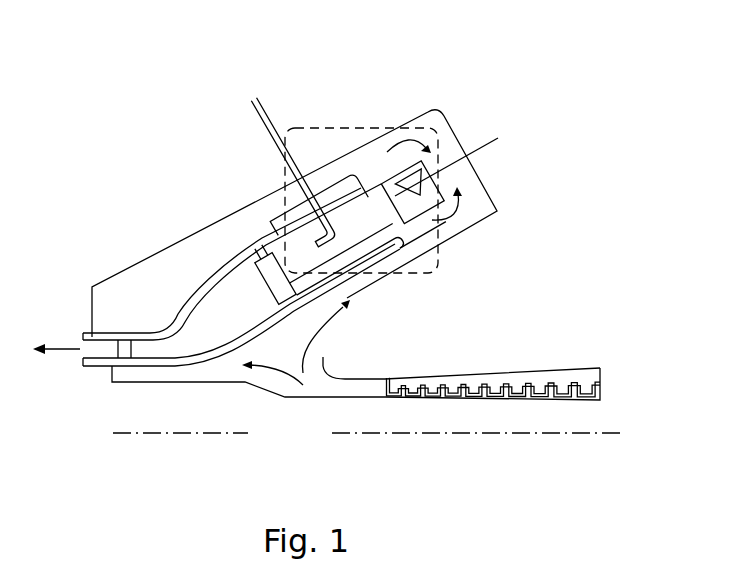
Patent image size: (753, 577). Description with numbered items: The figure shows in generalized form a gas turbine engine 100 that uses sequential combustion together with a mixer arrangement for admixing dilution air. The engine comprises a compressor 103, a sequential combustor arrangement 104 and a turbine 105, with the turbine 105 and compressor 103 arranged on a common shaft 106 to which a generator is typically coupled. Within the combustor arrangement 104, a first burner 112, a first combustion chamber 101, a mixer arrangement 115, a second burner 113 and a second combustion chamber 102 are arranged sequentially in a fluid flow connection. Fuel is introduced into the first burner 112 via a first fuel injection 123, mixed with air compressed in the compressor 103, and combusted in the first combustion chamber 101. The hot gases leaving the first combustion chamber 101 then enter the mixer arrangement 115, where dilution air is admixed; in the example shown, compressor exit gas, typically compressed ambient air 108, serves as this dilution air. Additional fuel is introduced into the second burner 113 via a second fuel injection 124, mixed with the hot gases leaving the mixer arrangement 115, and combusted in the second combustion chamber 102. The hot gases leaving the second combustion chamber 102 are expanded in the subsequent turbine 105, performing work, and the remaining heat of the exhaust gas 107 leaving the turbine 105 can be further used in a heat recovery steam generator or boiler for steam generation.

The gas turbine engine 100 is at (218, 98).
The first combustion chamber 101 is at (394, 190).
The second combustion chamber 102 is at (216, 291).
The compressor 103 is at (551, 408).
The sequential combustor arrangement 104 is at (499, 171).
The turbine 105 is at (130, 400).
The shaft 106 is at (263, 441).
The exhaust gas 107 is at (43, 352).
The compressed ambient air 108 is at (356, 398).
The first burner 112 is at (463, 192).
The second burner 113 is at (302, 273).
The mixer arrangement 115 is at (452, 242).
The first fuel injection 123 is at (498, 138).
The second fuel injection 124 is at (258, 104).